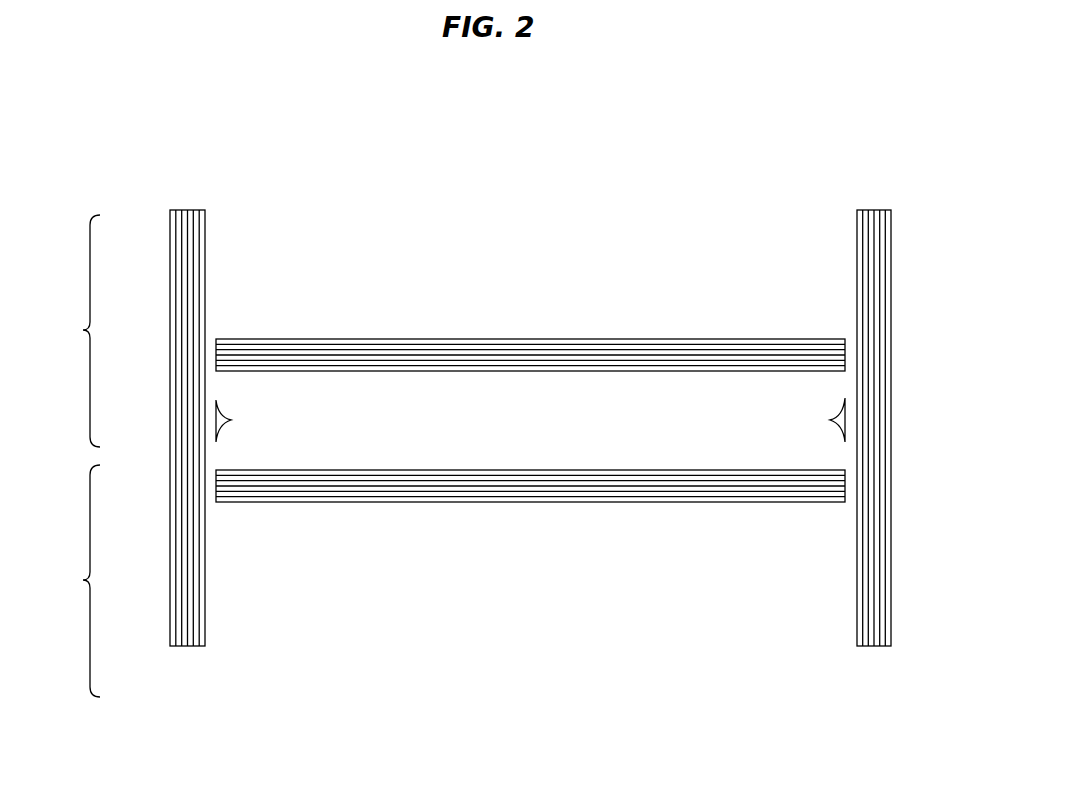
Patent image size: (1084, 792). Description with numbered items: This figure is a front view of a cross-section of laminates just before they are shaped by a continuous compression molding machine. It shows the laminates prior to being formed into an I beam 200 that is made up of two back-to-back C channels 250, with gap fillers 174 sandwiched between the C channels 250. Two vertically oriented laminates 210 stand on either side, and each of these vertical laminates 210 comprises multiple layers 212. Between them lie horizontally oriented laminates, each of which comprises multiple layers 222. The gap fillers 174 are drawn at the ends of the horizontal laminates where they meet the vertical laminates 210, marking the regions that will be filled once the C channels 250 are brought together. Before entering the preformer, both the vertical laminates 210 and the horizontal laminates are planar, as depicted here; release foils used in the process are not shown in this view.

The I beam 200 is at (268, 150).
The laminates 210 is at (169, 372).
The layers 212 is at (882, 204).
The layers 222 is at (530, 326).
The gap fillers 174 is at (229, 417).
The C channels 250 is at (72, 456).